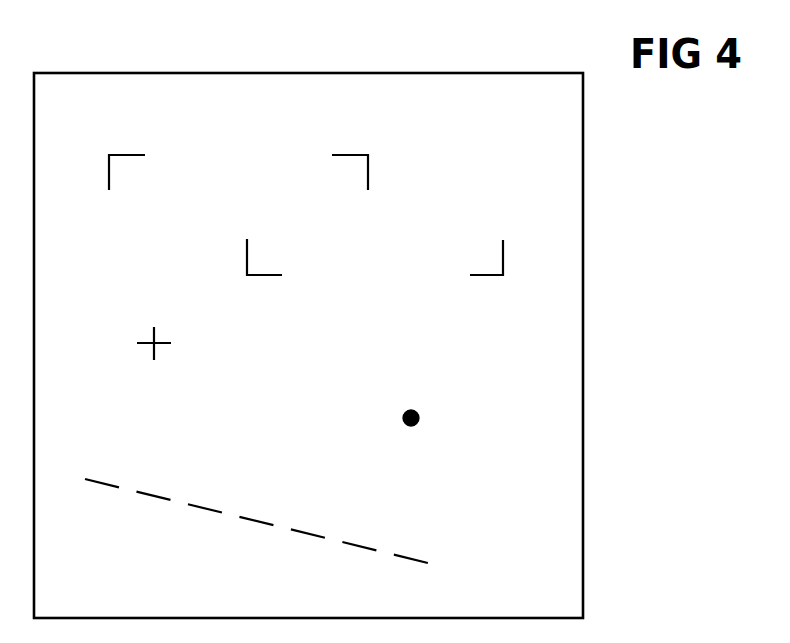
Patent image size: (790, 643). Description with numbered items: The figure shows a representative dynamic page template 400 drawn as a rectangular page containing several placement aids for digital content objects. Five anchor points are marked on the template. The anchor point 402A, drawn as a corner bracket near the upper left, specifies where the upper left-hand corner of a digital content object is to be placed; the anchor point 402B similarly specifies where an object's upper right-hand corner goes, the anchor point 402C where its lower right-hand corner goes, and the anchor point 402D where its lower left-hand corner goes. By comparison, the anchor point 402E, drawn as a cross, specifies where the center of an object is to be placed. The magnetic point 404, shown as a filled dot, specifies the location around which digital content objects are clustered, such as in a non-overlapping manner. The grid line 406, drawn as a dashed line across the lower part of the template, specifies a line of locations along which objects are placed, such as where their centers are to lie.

The dynamic page template 400 is at (79, 102).
The anchor point 402A is at (159, 113).
The anchor point 402B is at (334, 148).
The anchor point 402C is at (499, 246).
The anchor point 402D is at (247, 264).
The anchor point 402E is at (162, 344).
The magnetic point 404 is at (418, 418).
The grid line 406 is at (245, 460).